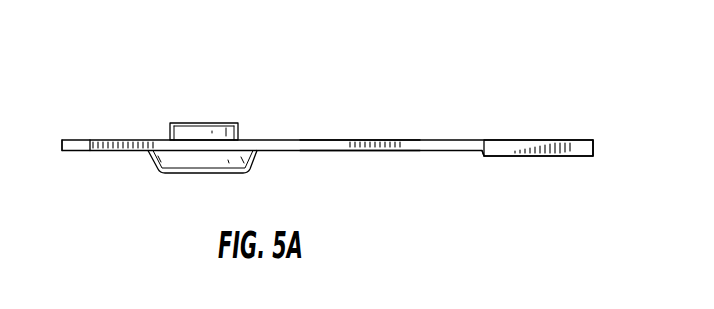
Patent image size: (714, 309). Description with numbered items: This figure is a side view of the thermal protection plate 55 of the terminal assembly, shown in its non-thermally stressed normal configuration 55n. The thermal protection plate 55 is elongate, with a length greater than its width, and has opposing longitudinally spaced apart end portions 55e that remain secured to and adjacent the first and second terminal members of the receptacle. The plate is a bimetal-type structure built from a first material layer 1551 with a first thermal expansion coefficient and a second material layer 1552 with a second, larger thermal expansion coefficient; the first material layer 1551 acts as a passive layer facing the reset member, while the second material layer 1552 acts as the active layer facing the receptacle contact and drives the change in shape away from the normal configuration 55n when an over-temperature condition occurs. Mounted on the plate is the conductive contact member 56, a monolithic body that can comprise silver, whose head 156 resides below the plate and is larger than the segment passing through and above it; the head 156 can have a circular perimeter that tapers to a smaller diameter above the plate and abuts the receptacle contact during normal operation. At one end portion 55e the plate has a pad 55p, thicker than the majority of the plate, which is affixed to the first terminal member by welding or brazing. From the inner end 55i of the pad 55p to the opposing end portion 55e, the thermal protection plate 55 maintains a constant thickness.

The thermal protection plate 55 is at (289, 61).
The end portions 55e is at (75, 139).
The conductive contact member 56 is at (192, 127).
The head 156 is at (193, 167).
The first material layer 1551 is at (360, 139).
The second material layer 1552 is at (345, 151).
The inner end 55i is at (484, 156).
The pad 55p is at (548, 156).
The normal configuration 55n is at (535, 246).